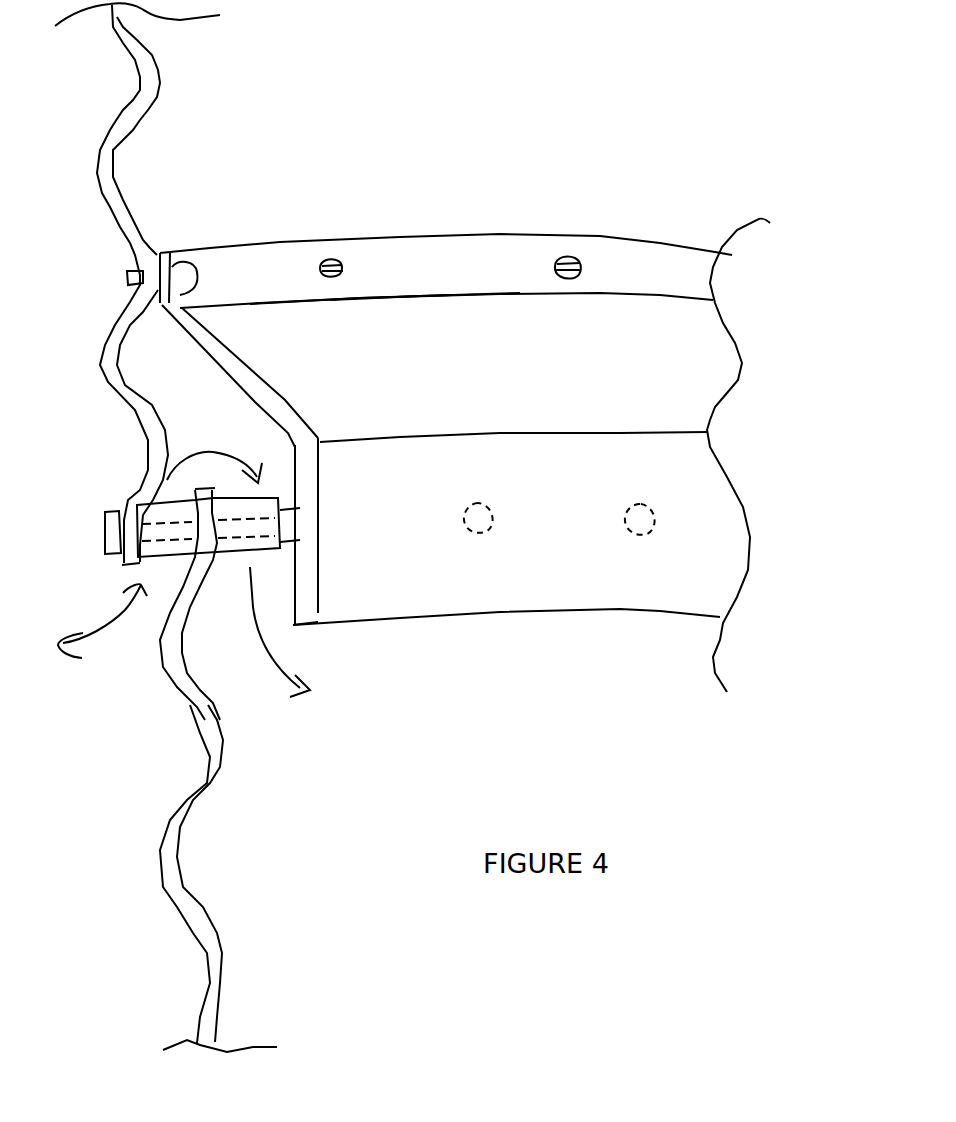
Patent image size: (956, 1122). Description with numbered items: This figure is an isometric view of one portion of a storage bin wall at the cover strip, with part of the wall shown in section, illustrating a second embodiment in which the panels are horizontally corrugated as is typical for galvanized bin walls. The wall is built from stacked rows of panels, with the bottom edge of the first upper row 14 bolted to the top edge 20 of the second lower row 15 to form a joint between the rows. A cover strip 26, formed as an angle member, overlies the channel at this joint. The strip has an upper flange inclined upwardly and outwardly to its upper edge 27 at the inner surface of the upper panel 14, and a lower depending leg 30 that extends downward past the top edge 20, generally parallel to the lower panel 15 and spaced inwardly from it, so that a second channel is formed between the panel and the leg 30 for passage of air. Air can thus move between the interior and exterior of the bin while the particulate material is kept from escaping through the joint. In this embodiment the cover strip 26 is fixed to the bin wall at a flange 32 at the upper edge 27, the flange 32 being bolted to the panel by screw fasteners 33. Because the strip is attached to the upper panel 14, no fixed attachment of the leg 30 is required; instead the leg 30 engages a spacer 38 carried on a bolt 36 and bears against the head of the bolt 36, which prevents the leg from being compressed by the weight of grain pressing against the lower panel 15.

The first upper row 14 is at (122, 143).
The second lower row 15 is at (160, 850).
The top edge 20 is at (205, 518).
The cover strip 26 is at (398, 330).
The upper edge 27 is at (362, 297).
The lower depending leg 30 is at (380, 590).
The flange 32 is at (287, 257).
The mounting hole 33 is at (572, 263).
The bolt 36 is at (158, 533).
The spacer 38 is at (263, 507).